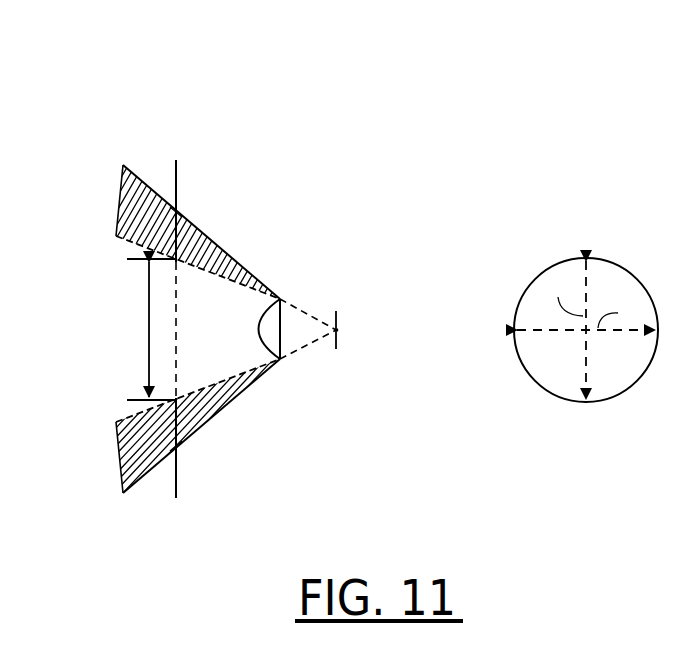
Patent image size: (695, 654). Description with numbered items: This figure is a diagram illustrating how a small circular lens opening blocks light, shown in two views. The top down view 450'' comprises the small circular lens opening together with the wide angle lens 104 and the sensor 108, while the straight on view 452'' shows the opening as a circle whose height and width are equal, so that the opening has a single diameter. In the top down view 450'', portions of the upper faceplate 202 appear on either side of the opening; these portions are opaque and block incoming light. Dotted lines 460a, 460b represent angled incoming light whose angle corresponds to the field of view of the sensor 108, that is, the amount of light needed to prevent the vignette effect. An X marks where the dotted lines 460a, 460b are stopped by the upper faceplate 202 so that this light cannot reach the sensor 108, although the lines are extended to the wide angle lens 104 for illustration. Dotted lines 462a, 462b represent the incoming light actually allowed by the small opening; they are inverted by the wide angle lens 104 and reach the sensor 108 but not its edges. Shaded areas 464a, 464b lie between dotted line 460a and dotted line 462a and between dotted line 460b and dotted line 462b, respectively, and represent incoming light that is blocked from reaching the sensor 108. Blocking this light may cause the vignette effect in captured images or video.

The top down view 450'' is at (202, 268).
The straight on view 452'' is at (571, 259).
The upper faceplate 202 is at (178, 160).
The dotted line 460a is at (207, 230).
The dotted line 460b is at (192, 430).
The dotted line 462a is at (118, 236).
The dotted line 462b is at (110, 428).
The shaded area 464a is at (113, 215).
The shaded area 464b is at (126, 452).
The wide angle lens 104 is at (283, 300).
The sensor 108 is at (338, 327).